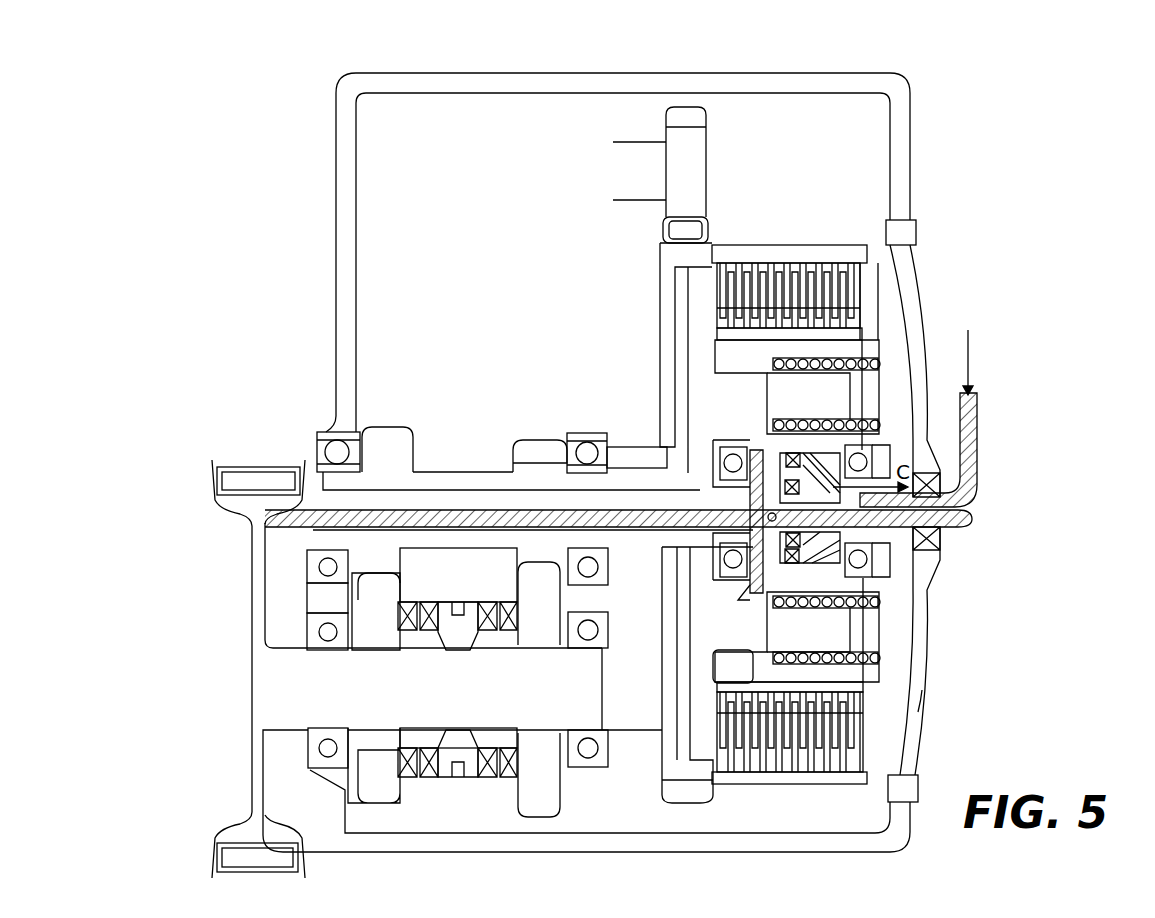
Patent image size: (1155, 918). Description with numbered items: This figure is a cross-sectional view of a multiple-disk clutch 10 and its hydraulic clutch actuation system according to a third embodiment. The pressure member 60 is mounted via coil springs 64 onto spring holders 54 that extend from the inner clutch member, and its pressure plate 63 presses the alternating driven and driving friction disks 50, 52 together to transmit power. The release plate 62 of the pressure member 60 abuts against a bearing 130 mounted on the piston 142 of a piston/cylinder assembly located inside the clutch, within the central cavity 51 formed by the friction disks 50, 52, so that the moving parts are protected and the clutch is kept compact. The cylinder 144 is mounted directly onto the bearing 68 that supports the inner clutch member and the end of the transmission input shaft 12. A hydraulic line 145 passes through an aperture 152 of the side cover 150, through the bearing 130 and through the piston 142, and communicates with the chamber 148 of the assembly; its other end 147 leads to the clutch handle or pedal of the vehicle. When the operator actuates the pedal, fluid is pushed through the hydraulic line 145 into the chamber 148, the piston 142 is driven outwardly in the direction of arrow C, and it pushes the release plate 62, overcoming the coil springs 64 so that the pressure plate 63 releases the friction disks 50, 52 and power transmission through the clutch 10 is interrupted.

The multiple-disk clutch 10 is at (866, 161).
The transmission input shaft 12 is at (470, 547).
The friction disks 50 is at (803, 268).
The central cavity 51 is at (733, 601).
The friction disks 52 is at (793, 330).
The spring holders 54 is at (866, 405).
The pressure member 60 is at (880, 326).
The release plate 62 is at (876, 590).
The pressure plate 63 is at (877, 298).
The coil springs 64 is at (908, 352).
The bearing 68 is at (710, 578).
The bearing 130 is at (866, 556).
The piston 142 is at (776, 481).
The cylinder 144 is at (782, 455).
The hydraulic line 145 is at (952, 512).
The other end of the hydraulic line 147 is at (978, 413).
The chamber 148 is at (750, 501).
The side cover 150 is at (920, 706).
The aperture 152 is at (941, 540).